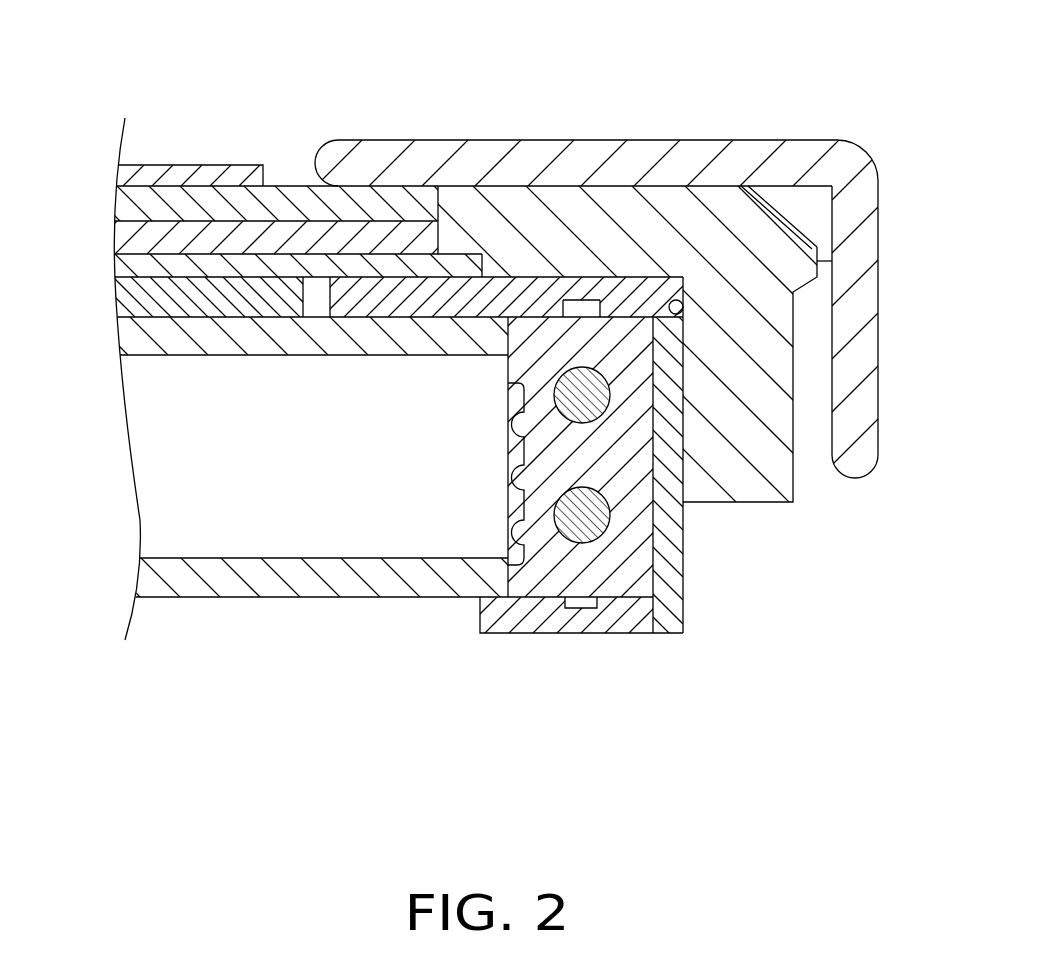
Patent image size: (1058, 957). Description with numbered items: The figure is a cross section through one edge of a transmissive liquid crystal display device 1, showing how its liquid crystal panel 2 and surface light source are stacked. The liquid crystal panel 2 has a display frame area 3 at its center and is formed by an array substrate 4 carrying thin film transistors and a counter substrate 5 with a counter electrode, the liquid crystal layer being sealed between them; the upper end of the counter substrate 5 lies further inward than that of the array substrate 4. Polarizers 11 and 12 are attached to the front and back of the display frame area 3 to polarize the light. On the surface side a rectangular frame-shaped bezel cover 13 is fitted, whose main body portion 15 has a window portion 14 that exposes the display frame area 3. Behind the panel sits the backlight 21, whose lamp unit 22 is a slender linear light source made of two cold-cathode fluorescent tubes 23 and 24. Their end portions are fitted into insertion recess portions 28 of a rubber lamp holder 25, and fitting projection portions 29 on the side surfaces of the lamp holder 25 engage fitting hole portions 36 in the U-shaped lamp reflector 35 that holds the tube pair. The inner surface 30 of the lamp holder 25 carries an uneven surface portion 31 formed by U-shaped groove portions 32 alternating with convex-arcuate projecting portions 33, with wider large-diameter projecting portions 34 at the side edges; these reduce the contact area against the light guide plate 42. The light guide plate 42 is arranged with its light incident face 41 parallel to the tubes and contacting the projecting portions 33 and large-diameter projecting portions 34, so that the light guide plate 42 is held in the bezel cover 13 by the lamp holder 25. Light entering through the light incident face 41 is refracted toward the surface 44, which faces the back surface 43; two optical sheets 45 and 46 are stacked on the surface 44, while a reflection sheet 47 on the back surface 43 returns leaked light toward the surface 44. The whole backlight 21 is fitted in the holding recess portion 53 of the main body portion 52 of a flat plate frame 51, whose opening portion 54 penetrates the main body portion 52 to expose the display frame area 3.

The liquid crystal display device 1 is at (805, 56).
The liquid crystal panel 2 is at (376, 174).
The display frame area 3 is at (263, 104).
The array substrate 4 is at (442, 228).
The counter substrate 5 is at (440, 205).
The polarizer 11 is at (185, 165).
The polarizer 12 is at (354, 254).
The bezel cover 13 is at (725, 128).
The window portion 14 is at (318, 143).
The main body portion 15 is at (878, 300).
The backlight 21 is at (343, 612).
The lamp unit 22 is at (700, 615).
The cold-cathode fluorescent tube 23 is at (655, 445).
The cold-cathode fluorescent tube 24 is at (610, 519).
The lamp holder 25 is at (633, 598).
The insertion recess portion 28 is at (603, 390).
The fitting projection portion 29 is at (573, 300).
The inner surface 30 is at (507, 473).
The uneven surface portion 31 is at (507, 402).
The groove portion 32 is at (507, 417).
The projecting portion 33 is at (507, 393).
The large-diameter projecting portion 34 is at (505, 318).
The lamp reflector 35 is at (660, 618).
The fitting hole portion 36 is at (588, 296).
The light incident face 41 is at (645, 432).
The light guide plate 42 is at (146, 570).
The back surface 43 is at (188, 597).
The surface 44 is at (120, 328).
The optical sheet 45 is at (118, 286).
The optical sheet 46 is at (277, 275).
The reflection sheet 47 is at (163, 597).
The frame 51 is at (811, 220).
The main body portion 52 is at (832, 261).
The holding recess portion 53 is at (683, 328).
The opening portion 54 is at (437, 186).